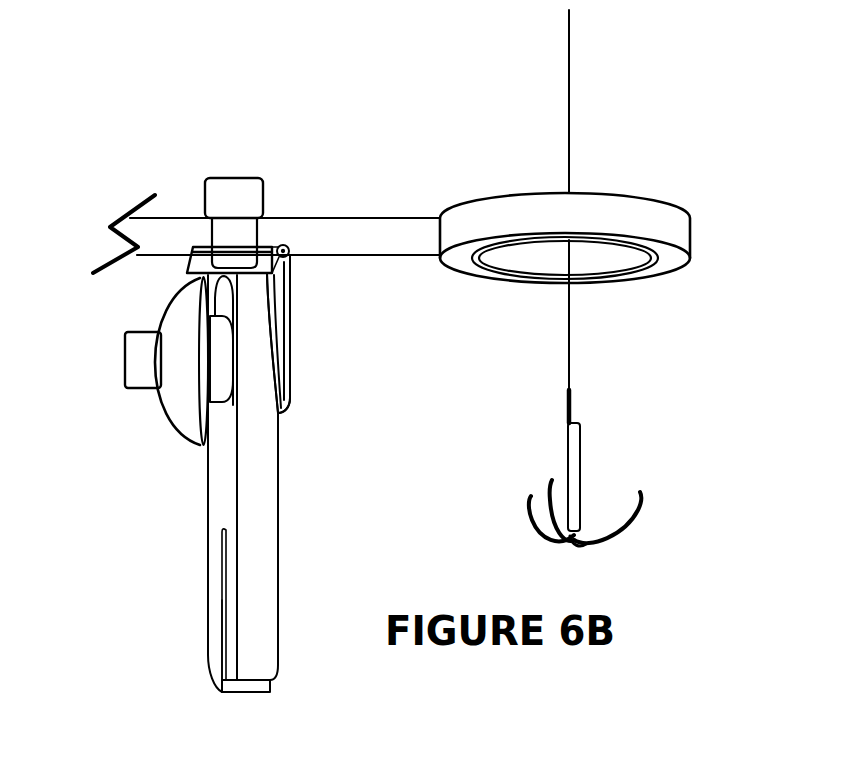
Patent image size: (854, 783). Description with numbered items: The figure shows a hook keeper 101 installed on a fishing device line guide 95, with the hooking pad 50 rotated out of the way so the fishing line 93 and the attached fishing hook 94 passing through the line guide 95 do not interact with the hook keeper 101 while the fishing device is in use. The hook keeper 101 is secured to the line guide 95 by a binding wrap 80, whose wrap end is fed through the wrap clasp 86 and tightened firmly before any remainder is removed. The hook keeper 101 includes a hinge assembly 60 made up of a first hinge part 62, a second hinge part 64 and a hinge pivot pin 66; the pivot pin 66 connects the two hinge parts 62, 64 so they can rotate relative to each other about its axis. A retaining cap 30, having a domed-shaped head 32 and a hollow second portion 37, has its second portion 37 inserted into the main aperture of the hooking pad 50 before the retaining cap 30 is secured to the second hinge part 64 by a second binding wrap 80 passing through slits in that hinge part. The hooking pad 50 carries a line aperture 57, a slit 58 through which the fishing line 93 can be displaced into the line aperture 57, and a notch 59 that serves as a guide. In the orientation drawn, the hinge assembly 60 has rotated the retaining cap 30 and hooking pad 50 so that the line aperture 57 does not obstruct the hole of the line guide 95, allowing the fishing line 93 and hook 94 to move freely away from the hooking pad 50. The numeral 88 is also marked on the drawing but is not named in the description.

The hook keeper 101 is at (142, 498).
The retaining cap 30 is at (183, 392).
The domed-shaped head 32 is at (175, 327).
The second portion of the retaining cap 37 is at (217, 378).
The hooking pad 50 is at (225, 495).
The line aperture 57 is at (225, 548).
The slit 58 is at (225, 613).
The notch 59 is at (270, 683).
The hinge assembly 60 is at (358, 377).
The first hinge part 62 is at (262, 260).
The second hinge part 64 is at (290, 398).
The hinge pivot pin 66 is at (288, 258).
The binding wrap 80 is at (255, 160).
The wrap clasp 86 is at (235, 190).
The fastener body 88 is at (232, 227).
The fishing line 93 is at (567, 127).
The fishing hook 94 is at (580, 462).
The line guide 95 is at (618, 212).